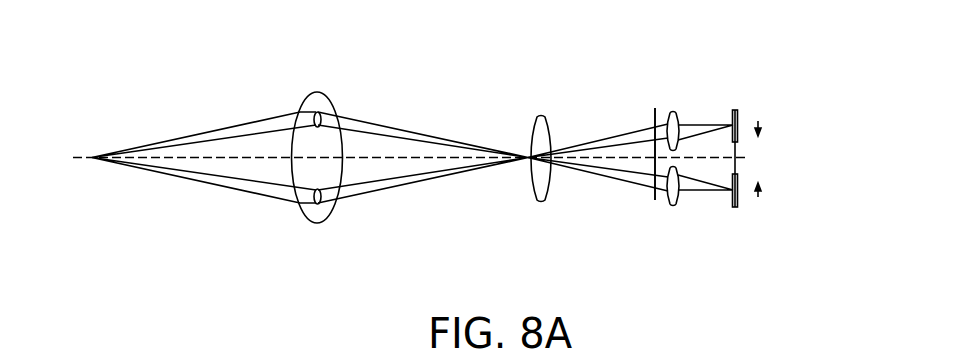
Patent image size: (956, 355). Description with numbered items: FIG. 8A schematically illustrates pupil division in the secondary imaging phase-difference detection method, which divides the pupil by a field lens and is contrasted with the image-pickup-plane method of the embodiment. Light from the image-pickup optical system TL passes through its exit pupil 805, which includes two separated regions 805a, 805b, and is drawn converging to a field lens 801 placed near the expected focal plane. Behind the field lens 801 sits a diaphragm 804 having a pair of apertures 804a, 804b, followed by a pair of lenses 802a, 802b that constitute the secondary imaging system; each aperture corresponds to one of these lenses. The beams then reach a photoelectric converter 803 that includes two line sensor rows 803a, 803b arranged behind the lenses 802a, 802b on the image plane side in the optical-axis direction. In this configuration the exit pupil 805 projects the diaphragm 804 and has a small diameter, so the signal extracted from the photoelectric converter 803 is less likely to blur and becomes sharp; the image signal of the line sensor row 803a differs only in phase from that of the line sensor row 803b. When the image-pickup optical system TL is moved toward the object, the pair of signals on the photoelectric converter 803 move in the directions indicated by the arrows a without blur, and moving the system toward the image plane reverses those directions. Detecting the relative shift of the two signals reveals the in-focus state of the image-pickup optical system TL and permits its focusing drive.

The field lens 801 is at (540, 201).
The lens of secondary imaging system 802a is at (673, 116).
The lens of secondary imaging system 802b is at (673, 206).
The photoelectric converter 803 is at (738, 96).
The line sensor row 803a is at (738, 117).
The line sensor row 803b is at (738, 202).
The diaphragm 804 is at (655, 98).
The aperture 804a is at (653, 118).
The aperture 804b is at (654, 198).
The exit pupil 805 is at (317, 88).
The separated region of exit pupil 805a is at (321, 111).
The separated region of exit pupil 805b is at (323, 200).
The image-pickup optical system TL is at (309, 106).
The arrows A a is at (768, 185).